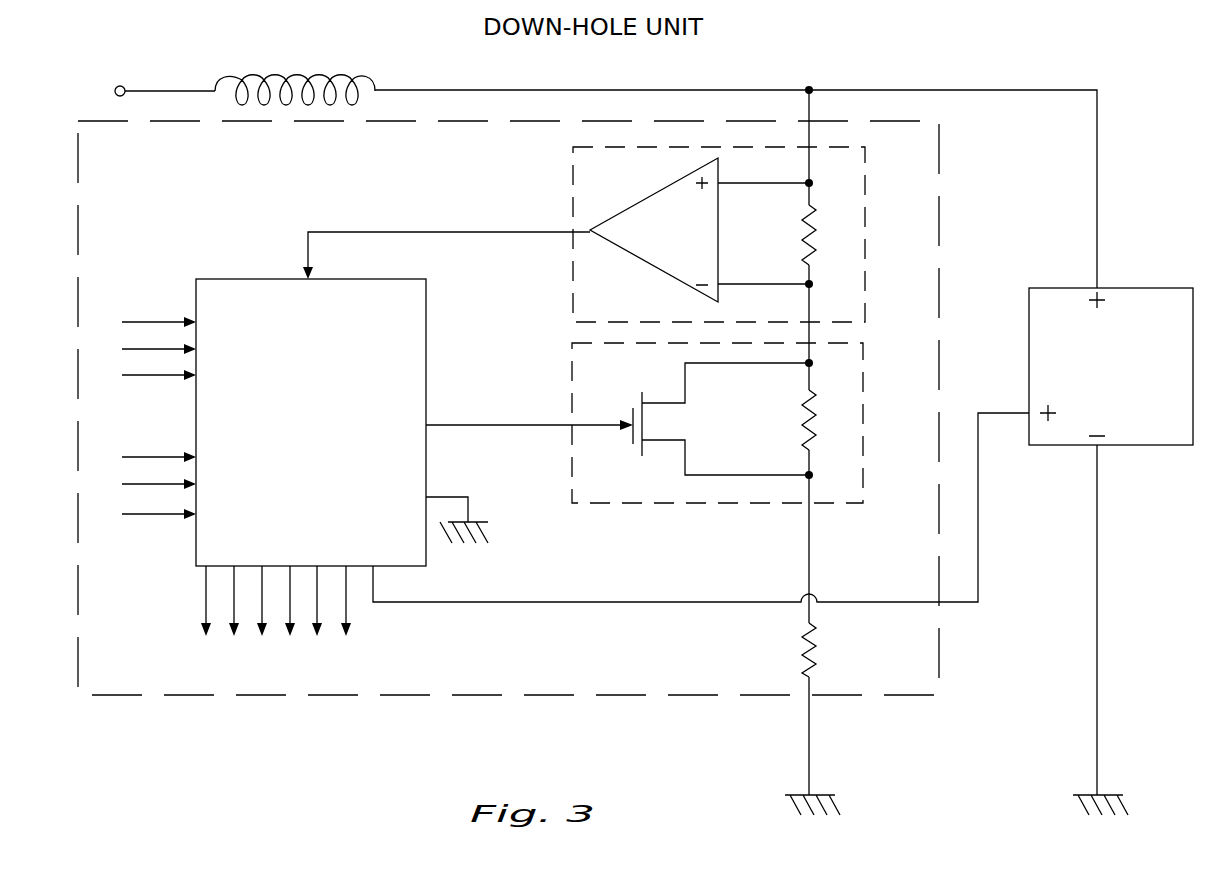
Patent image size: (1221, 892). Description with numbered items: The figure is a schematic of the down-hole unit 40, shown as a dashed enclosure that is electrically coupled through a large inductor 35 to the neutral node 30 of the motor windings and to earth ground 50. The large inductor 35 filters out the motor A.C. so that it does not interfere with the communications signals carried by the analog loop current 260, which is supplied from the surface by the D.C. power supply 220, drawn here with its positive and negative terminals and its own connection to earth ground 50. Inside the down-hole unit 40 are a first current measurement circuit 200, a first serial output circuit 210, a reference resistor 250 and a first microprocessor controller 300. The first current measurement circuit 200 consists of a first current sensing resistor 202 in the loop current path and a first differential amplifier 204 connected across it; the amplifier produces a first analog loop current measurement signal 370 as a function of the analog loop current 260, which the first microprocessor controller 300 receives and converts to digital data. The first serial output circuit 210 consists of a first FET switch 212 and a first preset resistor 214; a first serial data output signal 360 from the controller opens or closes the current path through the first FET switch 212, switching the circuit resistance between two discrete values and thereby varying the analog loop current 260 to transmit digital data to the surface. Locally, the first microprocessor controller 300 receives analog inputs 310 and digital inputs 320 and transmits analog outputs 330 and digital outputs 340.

The neutral node 30 is at (120, 86).
The large inductor 35 is at (253, 79).
The analog loop current 260 is at (436, 74).
The down-hole unit 40 is at (940, 196).
The first current measurement circuit 200 is at (866, 218).
The first current sensing resistor 202 is at (800, 246).
The first current measurement signal generator 204 is at (701, 230).
The first serial output circuit 210 is at (866, 392).
The first switch assembly 212 is at (645, 398).
The first preset resistor 214 is at (800, 432).
The D.C. power supply 220 is at (1111, 541).
The reference resistor 250 is at (800, 645).
The first microprocessor controller 300 is at (311, 422).
The analog inputs 310 is at (138, 348).
The digital inputs 320 is at (137, 485).
The analog outputs 330 is at (234, 619).
The digital outputs 340 is at (318, 619).
The first serial data output signal 360 is at (529, 415).
The first analog loop current measurement signal 370 is at (446, 243).
The earth ground 50 is at (838, 795).